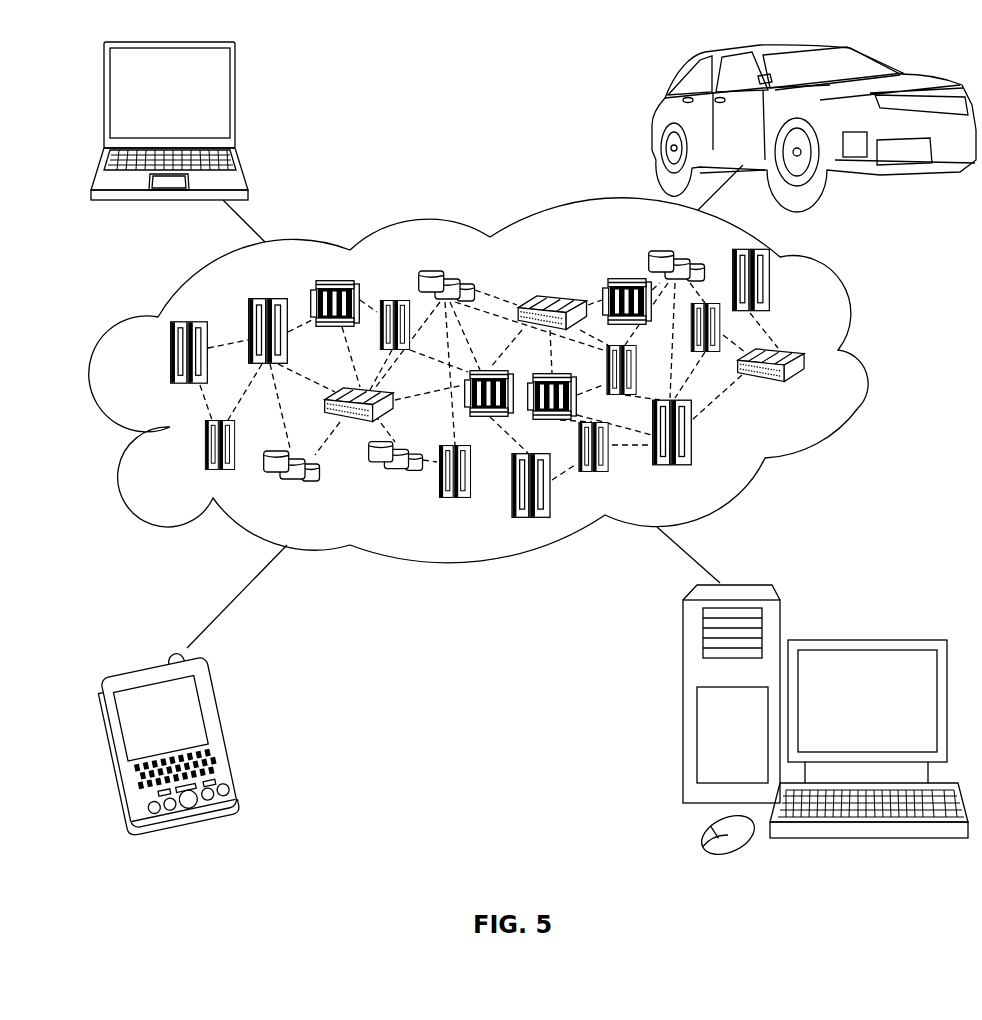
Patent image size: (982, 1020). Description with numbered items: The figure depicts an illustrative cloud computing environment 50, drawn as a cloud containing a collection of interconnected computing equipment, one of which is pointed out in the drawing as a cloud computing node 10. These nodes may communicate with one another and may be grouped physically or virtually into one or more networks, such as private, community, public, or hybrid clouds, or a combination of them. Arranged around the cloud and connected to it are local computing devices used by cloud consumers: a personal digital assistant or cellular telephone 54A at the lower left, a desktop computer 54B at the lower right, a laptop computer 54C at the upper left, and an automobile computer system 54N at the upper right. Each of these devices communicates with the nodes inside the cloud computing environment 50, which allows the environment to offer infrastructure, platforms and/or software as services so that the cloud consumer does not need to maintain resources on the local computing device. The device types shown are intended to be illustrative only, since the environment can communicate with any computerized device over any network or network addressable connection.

The cloud computing node 10 is at (808, 392).
The cloud computing environment 50 is at (867, 365).
The personal digital assistant (PDA) or cellular telephone 54A is at (228, 729).
The desktop computer 54B is at (863, 640).
The laptop computer 54C is at (237, 101).
The automobile computer system 54N is at (654, 114).